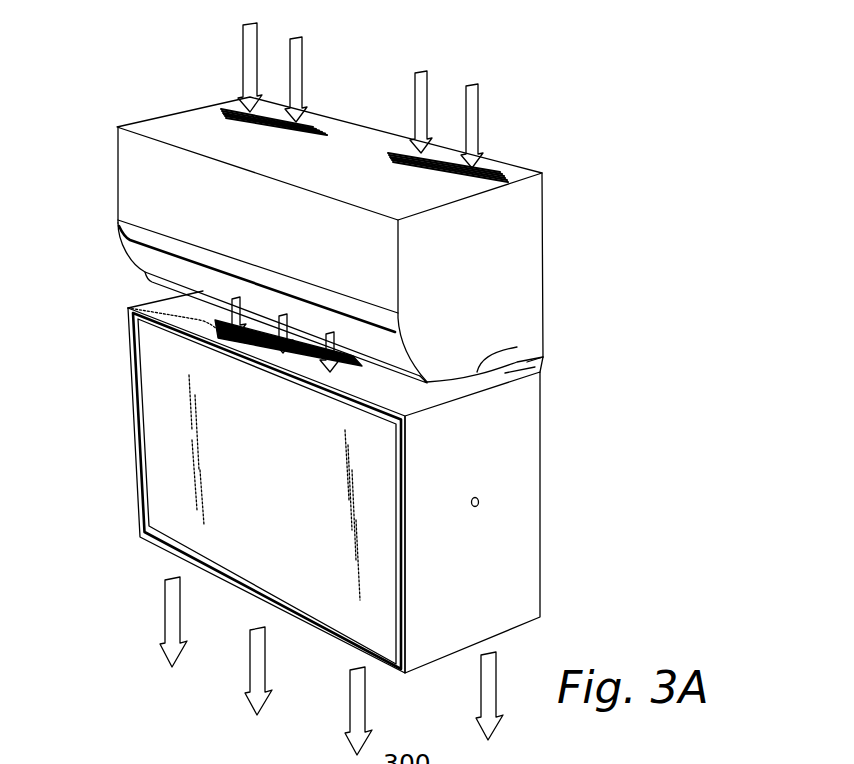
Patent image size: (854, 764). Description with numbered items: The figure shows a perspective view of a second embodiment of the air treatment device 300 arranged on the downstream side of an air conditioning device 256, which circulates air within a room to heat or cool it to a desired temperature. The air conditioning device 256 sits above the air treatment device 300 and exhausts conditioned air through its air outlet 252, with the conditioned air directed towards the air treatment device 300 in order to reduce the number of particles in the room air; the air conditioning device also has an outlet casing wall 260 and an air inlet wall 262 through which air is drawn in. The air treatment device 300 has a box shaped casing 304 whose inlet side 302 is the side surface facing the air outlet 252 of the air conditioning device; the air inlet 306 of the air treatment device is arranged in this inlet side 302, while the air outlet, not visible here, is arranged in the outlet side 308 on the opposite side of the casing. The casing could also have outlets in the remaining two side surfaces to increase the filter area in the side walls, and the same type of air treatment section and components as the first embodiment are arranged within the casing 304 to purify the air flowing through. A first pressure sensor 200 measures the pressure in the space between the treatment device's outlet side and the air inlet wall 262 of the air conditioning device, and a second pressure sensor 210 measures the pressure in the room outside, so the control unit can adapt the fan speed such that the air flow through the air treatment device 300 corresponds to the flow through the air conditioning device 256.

The first pressure sensor 200 is at (207, 304).
The second pressure sensor 210 is at (487, 500).
The air outlet 252 is at (417, 356).
The air conditioning device 256 is at (522, 220).
The outlet casing wall 260 is at (517, 347).
The air inlet wall 262 is at (341, 143).
The air treatment device 300 is at (371, 478).
The inlet side 302 is at (540, 372).
The casing 304 is at (520, 583).
The air inlet 306 is at (127, 308).
The outlet side 308 is at (312, 627).